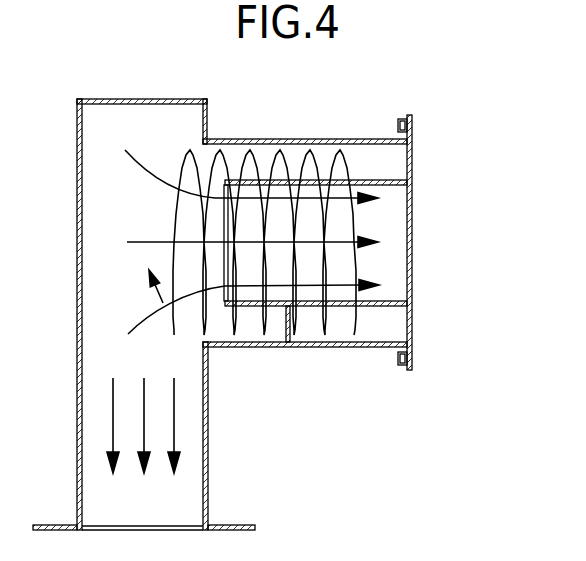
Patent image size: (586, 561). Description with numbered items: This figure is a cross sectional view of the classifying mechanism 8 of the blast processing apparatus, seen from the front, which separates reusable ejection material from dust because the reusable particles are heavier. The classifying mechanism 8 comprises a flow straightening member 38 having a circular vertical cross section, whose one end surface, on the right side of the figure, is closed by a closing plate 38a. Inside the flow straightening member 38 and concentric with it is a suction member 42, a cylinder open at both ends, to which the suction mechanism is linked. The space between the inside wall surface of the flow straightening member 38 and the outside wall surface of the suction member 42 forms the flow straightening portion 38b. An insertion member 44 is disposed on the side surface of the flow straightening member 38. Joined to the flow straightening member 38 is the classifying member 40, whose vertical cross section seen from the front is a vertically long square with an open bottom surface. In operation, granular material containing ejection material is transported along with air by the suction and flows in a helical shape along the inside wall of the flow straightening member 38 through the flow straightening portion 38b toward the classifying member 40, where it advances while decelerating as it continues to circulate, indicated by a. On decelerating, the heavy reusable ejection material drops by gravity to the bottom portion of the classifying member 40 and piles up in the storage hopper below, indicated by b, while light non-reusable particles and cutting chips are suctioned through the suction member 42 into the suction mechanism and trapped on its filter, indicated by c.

The classifying mechanism 8 is at (428, 89).
The flow straightening member 38 is at (305, 120).
The closing plate 38a is at (458, 232).
The flow straightening portion 38b is at (264, 203).
The classifying member 40 is at (144, 294).
The suction member 42 is at (356, 243).
The insertion member 44 is at (305, 381).
The circulating and decelerating flow a is at (365, 328).
The dropping of reusable ejection material b is at (143, 413).
The suction of light particles c is at (244, 242).